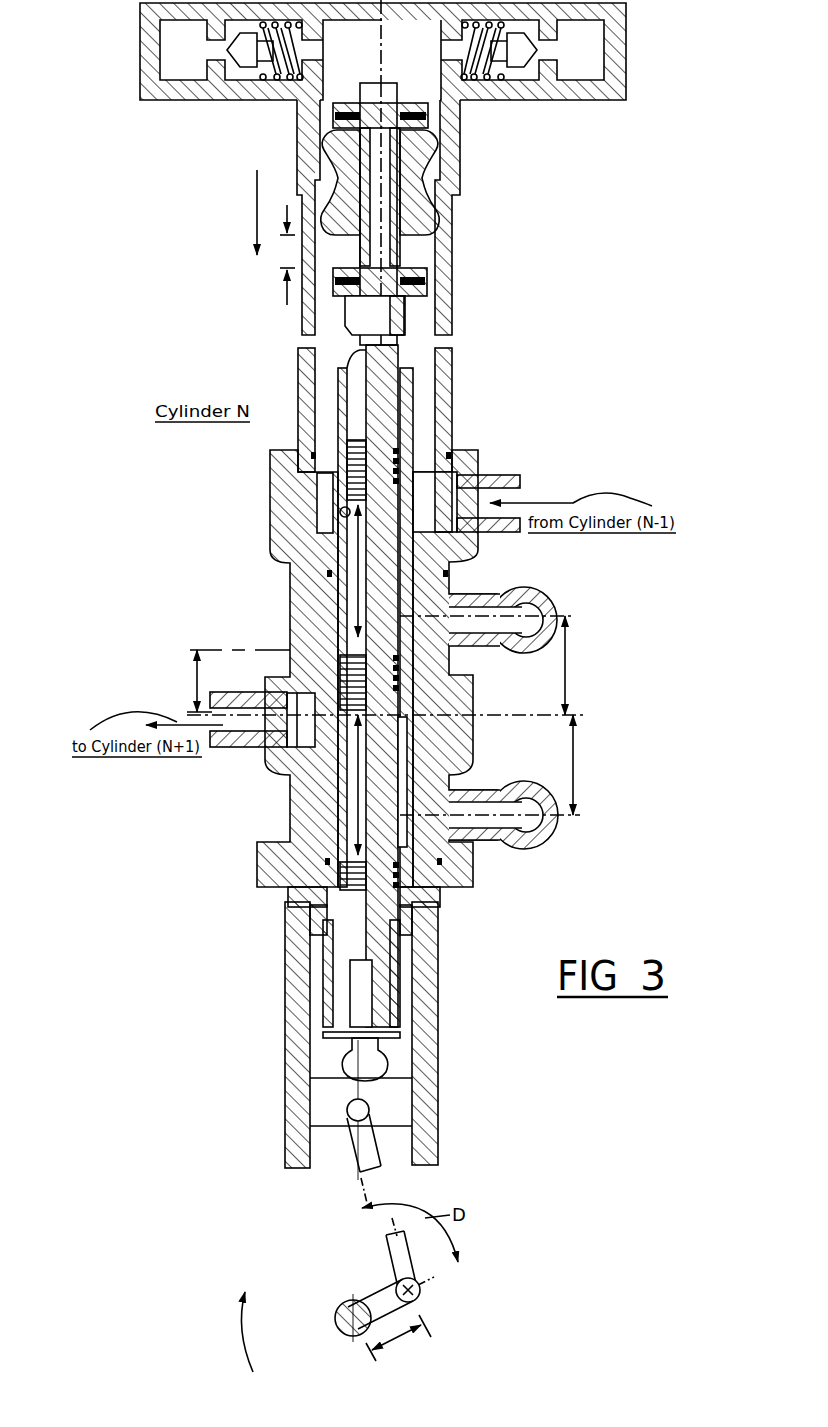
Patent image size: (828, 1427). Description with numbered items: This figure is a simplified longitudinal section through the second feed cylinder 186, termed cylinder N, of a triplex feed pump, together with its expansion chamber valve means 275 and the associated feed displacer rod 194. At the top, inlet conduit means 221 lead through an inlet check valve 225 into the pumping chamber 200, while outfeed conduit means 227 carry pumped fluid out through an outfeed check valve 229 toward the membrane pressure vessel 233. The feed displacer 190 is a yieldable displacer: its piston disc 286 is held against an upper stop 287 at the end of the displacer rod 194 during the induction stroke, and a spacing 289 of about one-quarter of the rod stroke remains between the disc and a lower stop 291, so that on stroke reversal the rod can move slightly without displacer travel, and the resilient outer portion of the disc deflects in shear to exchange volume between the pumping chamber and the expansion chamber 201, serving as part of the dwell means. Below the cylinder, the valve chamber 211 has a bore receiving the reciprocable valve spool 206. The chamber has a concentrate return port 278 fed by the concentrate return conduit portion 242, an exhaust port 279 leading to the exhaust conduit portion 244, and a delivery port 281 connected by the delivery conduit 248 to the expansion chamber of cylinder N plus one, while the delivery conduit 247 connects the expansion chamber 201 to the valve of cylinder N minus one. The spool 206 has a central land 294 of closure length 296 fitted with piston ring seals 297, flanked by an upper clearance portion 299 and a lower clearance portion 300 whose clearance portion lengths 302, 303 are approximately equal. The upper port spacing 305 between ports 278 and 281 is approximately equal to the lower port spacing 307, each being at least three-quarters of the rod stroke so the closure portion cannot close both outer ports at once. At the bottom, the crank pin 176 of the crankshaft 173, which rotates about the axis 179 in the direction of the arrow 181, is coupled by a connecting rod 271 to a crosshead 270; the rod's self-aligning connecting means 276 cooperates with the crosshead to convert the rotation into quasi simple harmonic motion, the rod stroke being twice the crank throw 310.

The inlet conduit means 221 is at (176, 47).
The outfeed conduit means 227 is at (590, 46).
The inlet check valve 225 is at (248, 67).
The pumping chamber 200 is at (426, 68).
The outfeed check valve 229 is at (430, 116).
The upper stop 287 is at (410, 116).
The feed displacer 190 is at (458, 157).
The piston disc 286 is at (412, 178).
The lower stop 291 is at (408, 281).
The feed displacer rod 194 is at (413, 312).
The membrane pressure vessel 233 is at (257, 232).
The spacing 289 is at (287, 305).
The second feed cylinder 186 is at (285, 328).
The expansion chamber 201 is at (417, 407).
The delivery conduit 247 is at (488, 475).
The self-aligning connecting means 276 is at (341, 512).
The clearance portion length 302 is at (333, 532).
The upper clearance portion 299 is at (380, 541).
The valve spool 206 is at (438, 548).
The valve chamber 211 is at (345, 574).
The concentrate return conduit portion 242 is at (528, 592).
The central land 294 is at (342, 653).
The closure length 296 is at (197, 688).
The delivery conduit 248 is at (238, 692).
The concentrate return port 278 is at (413, 660).
The upper port spacing 305 is at (568, 660).
The piston ring seals 297 is at (402, 672).
The lower clearance portion 300 is at (400, 745).
The delivery port 281 is at (312, 744).
The lower port spacing 307 is at (578, 748).
The clearance portion length 303 is at (357, 822).
The exhaust conduit portion 244 is at (518, 826).
The exhaust port 279 is at (450, 838).
The expansion chamber valve means 275 is at (267, 934).
The crosshead 270 is at (382, 1090).
The connecting rod 271 is at (373, 1165).
The crank pin 176 is at (421, 1292).
The axis 179 is at (346, 1309).
The crankshaft 173 is at (345, 1328).
The throw 310 is at (398, 1346).
The arrow 181 is at (240, 1330).